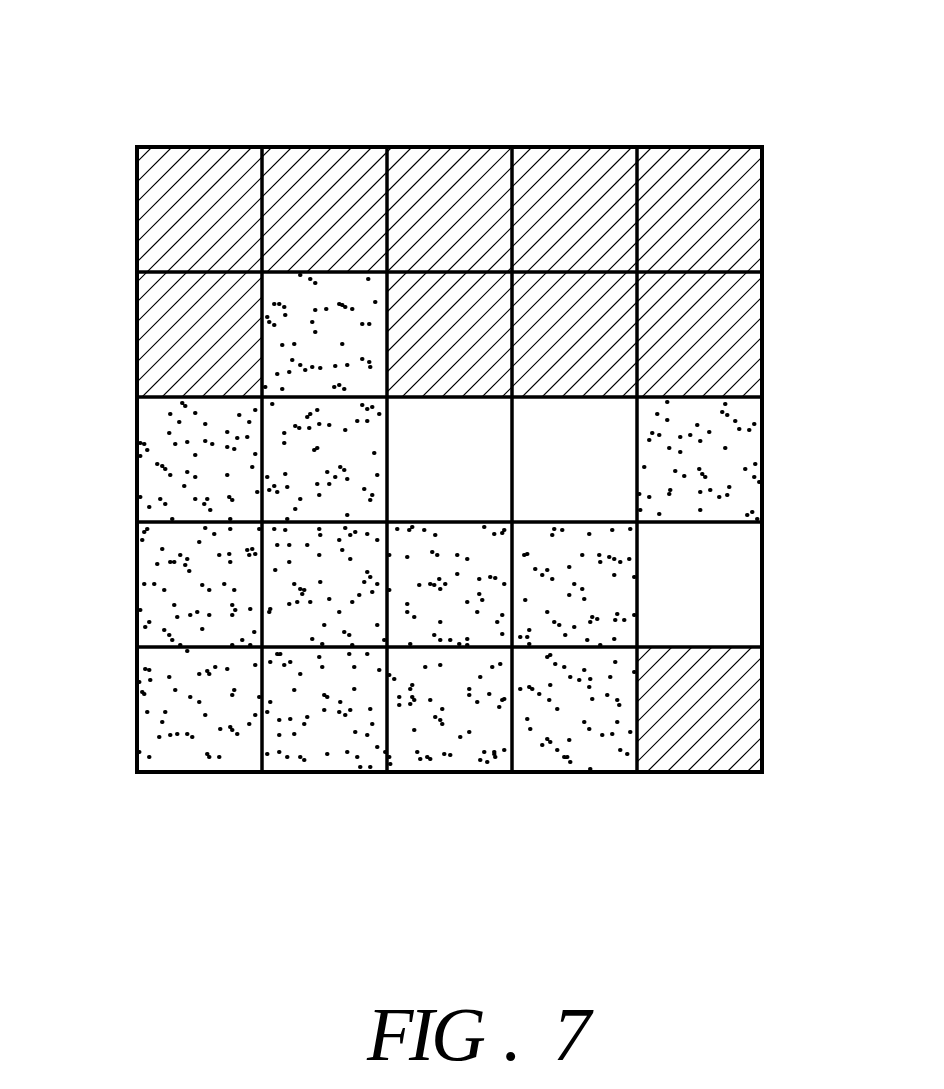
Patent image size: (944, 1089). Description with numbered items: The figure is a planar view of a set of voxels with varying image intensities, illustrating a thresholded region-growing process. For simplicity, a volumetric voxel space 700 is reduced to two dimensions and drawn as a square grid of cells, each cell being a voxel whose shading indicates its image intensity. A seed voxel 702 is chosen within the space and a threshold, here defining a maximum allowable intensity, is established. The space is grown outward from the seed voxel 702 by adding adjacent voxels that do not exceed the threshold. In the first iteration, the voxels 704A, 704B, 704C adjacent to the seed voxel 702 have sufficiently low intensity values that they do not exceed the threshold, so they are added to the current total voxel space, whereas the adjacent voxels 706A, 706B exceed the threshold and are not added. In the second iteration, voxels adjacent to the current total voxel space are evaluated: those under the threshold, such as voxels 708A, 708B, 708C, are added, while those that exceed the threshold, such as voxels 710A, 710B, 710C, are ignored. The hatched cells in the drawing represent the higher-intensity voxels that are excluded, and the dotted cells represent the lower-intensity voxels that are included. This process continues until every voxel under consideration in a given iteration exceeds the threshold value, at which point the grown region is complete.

The volumetric voxel space 700 is at (730, 82).
The seed voxel 702 is at (460, 474).
The voxel 704A is at (320, 600).
The voxel 704B is at (448, 600).
The voxel 704C is at (572, 600).
The voxel 706A is at (450, 340).
The voxel 706B is at (567, 340).
The voxel 708A is at (157, 471).
The voxel 708B is at (157, 596).
The voxel 708C is at (157, 721).
The voxel 710A is at (157, 343).
The voxel 710B is at (157, 220).
The voxel 710C is at (317, 167).